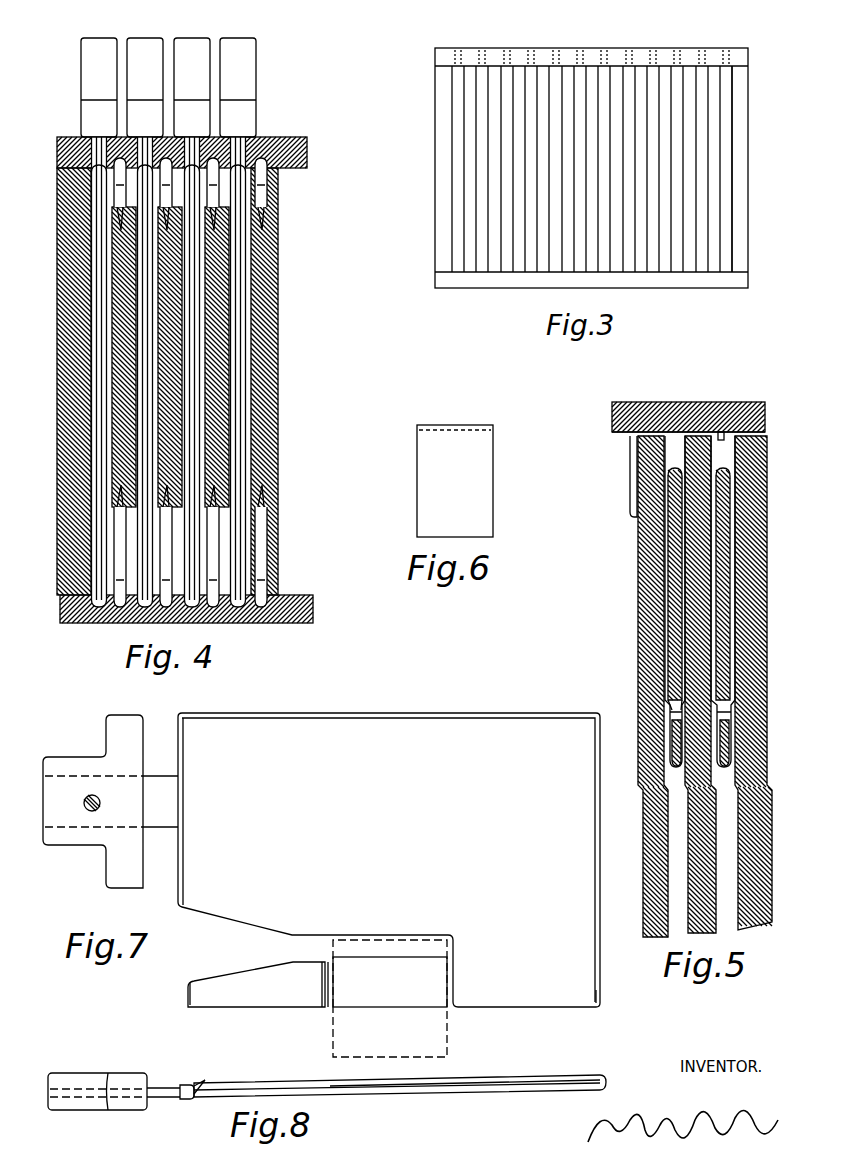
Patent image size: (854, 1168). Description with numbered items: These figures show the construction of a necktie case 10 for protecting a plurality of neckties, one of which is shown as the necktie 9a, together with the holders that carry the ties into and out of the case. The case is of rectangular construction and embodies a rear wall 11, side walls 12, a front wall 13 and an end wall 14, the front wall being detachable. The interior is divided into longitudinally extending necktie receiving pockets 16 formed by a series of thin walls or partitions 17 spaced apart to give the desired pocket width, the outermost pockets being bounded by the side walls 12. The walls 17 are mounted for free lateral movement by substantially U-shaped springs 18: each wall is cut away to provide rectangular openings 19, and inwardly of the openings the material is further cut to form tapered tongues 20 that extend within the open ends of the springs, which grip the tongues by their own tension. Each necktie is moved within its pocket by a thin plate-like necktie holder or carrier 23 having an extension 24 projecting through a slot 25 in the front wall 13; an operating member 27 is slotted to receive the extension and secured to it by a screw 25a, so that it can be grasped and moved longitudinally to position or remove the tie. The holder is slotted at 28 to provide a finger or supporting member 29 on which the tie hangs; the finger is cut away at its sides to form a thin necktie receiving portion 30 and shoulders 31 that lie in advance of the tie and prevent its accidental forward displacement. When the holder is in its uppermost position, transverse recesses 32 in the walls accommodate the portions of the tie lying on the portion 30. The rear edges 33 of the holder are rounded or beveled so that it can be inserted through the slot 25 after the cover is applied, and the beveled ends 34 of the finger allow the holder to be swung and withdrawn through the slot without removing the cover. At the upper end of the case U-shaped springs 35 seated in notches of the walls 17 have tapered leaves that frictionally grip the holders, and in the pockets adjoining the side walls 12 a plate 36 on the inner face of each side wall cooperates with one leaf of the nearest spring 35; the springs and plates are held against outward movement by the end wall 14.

In FIG. 7, the necktie 9a is at (448, 1028).
In FIG. 3, the necktie case 10 is at (622, 50).
In FIG. 4, the necktie case 10 is at (57, 318).
In FIG. 3, the rear wall 11 is at (690, 280).
In FIG. 4, the rear wall 11 is at (313, 601).
In FIG. 3, the side walls 12 is at (436, 178).
In FIG. 4, the side walls 12 is at (57, 374).
In FIG. 5, the side walls 12 is at (768, 434).
In FIG. 3, the front wall 13 is at (689, 52).
In FIG. 4, the front wall 13 is at (76, 137).
In FIG. 5, the end wall 14 is at (672, 402).
In FIG. 3, the necktie receiving pockets 16 is at (533, 86).
In FIG. 4, the necktie receiving pockets 16 is at (250, 366).
In FIG. 5, the necktie receiving pockets 16 is at (664, 556).
In FIG. 3, the walls or partitions 17 is at (568, 88).
In FIG. 4, the walls or partitions 17 is at (268, 271).
In FIG. 5, the walls or partitions 17 is at (640, 577).
In FIG. 4, the U-shaped springs 18 is at (268, 200).
In FIG. 6, the U-shaped springs 18 is at (476, 470).
In FIG. 4, the openings 19 is at (266, 188).
In FIG. 4, the tapered tongues 20 is at (272, 242).
In FIG. 4, the necktie holder or carrier 23 is at (246, 323).
In FIG. 5, the necktie holder or carrier 23 is at (672, 605).
In FIG. 7, the necktie holder or carrier 23 is at (463, 722).
In FIG. 8, the necktie holder or carrier 23 is at (540, 1082).
In FIG. 7, the extensions 24 is at (158, 775).
In FIG. 8, the extensions 24 is at (167, 1085).
In FIG. 3, the slots 25 is at (509, 55).
In FIG. 4, the slots 25 is at (262, 140).
In FIG. 7, the screws 25a is at (88, 812).
In FIG. 4, the operating members 27 is at (247, 66).
In FIG. 7, the operating members 27 is at (60, 762).
In FIG. 8, the operating members 27 is at (80, 1080).
In FIG. 5, the slot 28 is at (668, 700).
In FIG. 7, the slot 28 is at (318, 942).
In FIG. 5, the finger or supporting member 29 is at (672, 735).
In FIG. 7, the finger or supporting member 29 is at (265, 996).
In FIG. 8, the necktie receiving portion 30 is at (390, 1087).
In FIG. 8, the shoulders 31 is at (332, 1078).
In FIG. 5, the recesses 32 is at (668, 712).
In FIG. 7, the rear edges 33 is at (600, 982).
In FIG. 7, the beveled ends 34 is at (188, 1000).
In FIG. 8, the beveled ends 34 is at (188, 1101).
In FIG. 5, the U-shaped springs 35 is at (631, 478).
In FIG. 5, the plate 36 is at (721, 432).